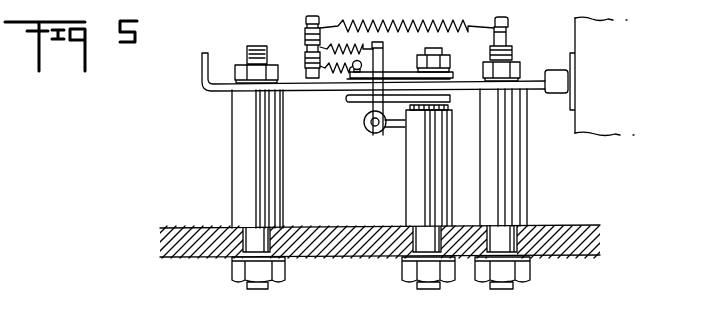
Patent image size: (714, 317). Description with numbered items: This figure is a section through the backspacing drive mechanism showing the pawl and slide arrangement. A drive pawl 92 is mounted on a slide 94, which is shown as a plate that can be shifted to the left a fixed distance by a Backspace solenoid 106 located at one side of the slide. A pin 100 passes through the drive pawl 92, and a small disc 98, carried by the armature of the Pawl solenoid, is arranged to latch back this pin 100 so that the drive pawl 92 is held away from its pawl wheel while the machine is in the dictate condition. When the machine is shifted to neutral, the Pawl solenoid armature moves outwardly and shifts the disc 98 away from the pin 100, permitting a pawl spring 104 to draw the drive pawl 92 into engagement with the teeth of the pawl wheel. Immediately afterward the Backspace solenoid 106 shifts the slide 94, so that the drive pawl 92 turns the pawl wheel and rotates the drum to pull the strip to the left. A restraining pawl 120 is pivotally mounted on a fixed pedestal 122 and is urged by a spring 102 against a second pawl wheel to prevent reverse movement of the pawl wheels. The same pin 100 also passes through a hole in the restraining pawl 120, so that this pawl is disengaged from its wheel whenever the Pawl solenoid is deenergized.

The drive pawl 92 is at (450, 72).
The slide 94 is at (213, 90).
The small disc 98 is at (366, 130).
The pin 100 is at (383, 64).
The spring 102 is at (309, 62).
The pawl spring 104 is at (306, 38).
The Backspace solenoid 106 is at (585, 115).
The restraining pawl 120 is at (355, 101).
The fixed pedestal 122 is at (412, 158).